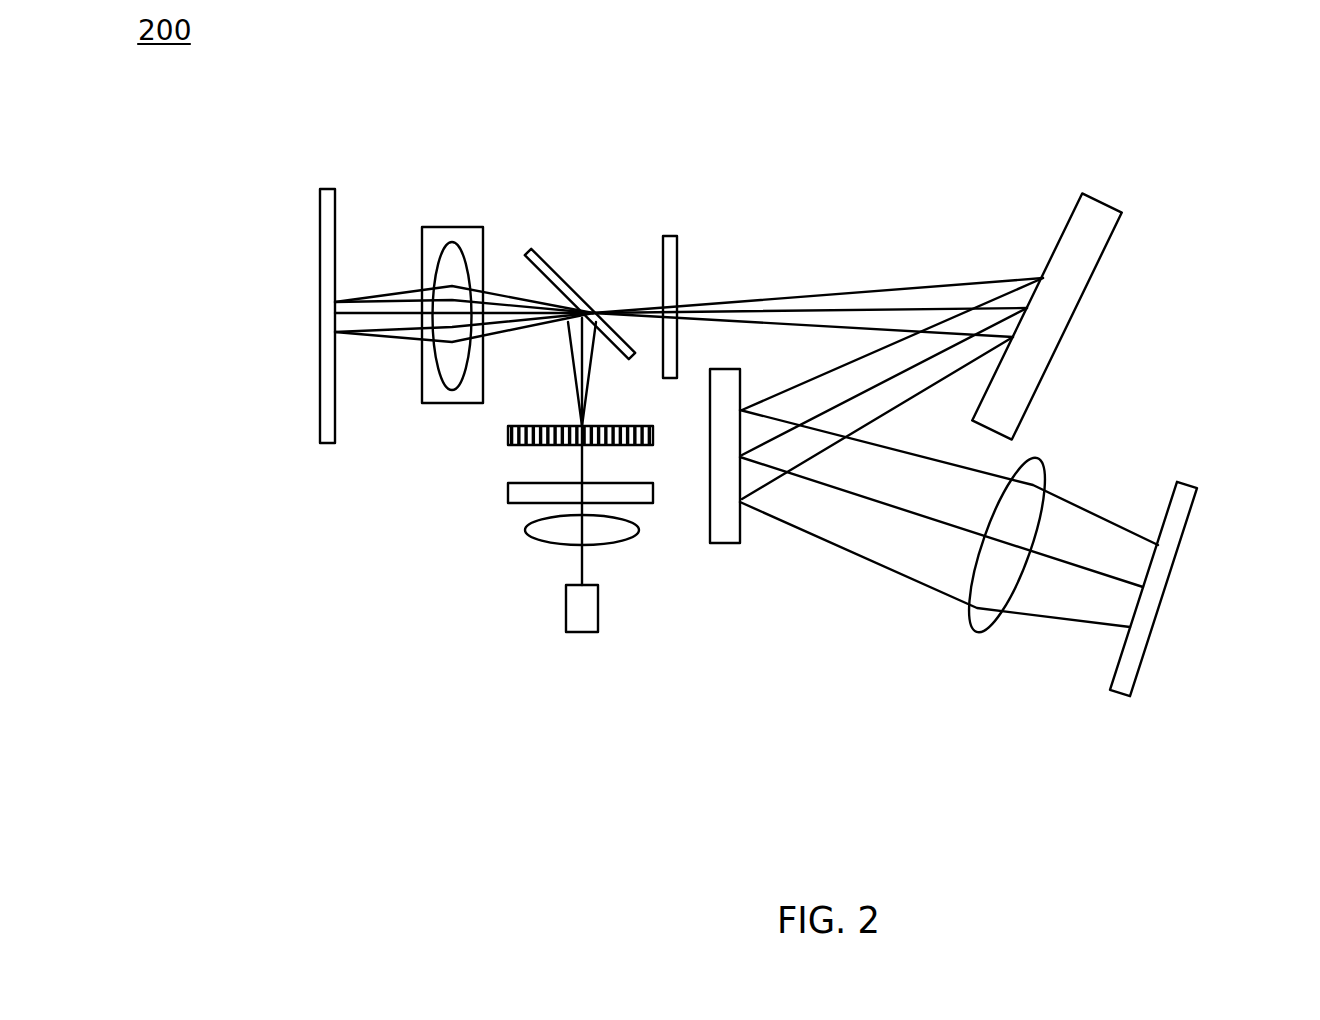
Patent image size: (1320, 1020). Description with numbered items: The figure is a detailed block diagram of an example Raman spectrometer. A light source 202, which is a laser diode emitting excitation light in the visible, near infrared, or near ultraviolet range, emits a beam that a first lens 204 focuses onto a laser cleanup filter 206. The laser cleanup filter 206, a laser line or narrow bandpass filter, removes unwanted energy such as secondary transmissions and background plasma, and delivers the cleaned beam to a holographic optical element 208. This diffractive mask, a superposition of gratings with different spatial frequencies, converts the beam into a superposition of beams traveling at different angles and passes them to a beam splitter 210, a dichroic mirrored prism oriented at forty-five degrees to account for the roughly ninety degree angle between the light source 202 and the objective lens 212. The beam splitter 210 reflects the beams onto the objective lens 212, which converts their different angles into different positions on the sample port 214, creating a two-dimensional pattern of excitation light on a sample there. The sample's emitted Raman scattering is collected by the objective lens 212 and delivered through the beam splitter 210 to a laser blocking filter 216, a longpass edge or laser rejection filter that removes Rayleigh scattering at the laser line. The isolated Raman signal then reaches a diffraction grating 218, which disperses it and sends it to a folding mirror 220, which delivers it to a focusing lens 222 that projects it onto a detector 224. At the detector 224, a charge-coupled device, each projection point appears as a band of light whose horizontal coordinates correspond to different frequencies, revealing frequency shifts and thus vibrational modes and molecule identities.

The light source 202 is at (582, 632).
The first lens 204 is at (523, 527).
The laser cleanup filter 206 is at (510, 495).
The holographic optical element 208 is at (510, 435).
The beam splitter 210 is at (540, 255).
The objective lens 212 is at (453, 227).
The sample port 214 is at (327, 189).
The laser blocking filter 216 is at (670, 235).
The diffraction grating 218 is at (1103, 203).
The folding mirror 220 is at (727, 543).
The focusing lens 222 is at (1043, 460).
The detector 224 is at (1190, 487).